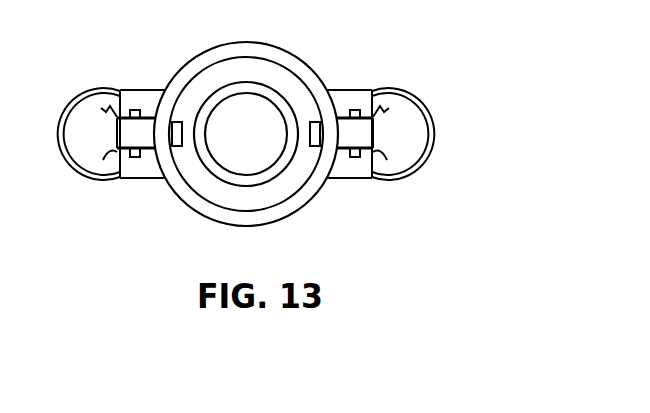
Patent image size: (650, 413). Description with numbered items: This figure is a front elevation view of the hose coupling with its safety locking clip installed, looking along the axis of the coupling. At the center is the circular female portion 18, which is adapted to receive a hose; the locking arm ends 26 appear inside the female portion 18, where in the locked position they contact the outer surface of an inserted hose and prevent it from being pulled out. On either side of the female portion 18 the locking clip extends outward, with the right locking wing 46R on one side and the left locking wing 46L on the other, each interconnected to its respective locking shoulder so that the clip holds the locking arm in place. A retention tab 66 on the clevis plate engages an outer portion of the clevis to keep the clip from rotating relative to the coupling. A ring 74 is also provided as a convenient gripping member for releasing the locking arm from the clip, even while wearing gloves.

The female portion 18 is at (287, 180).
The locking arm end 26 is at (193, 112).
The right locking wing 46R is at (113, 104).
The left locking wing 46L is at (388, 114).
The retention tab 66 is at (370, 96).
The ring 74 is at (429, 158).